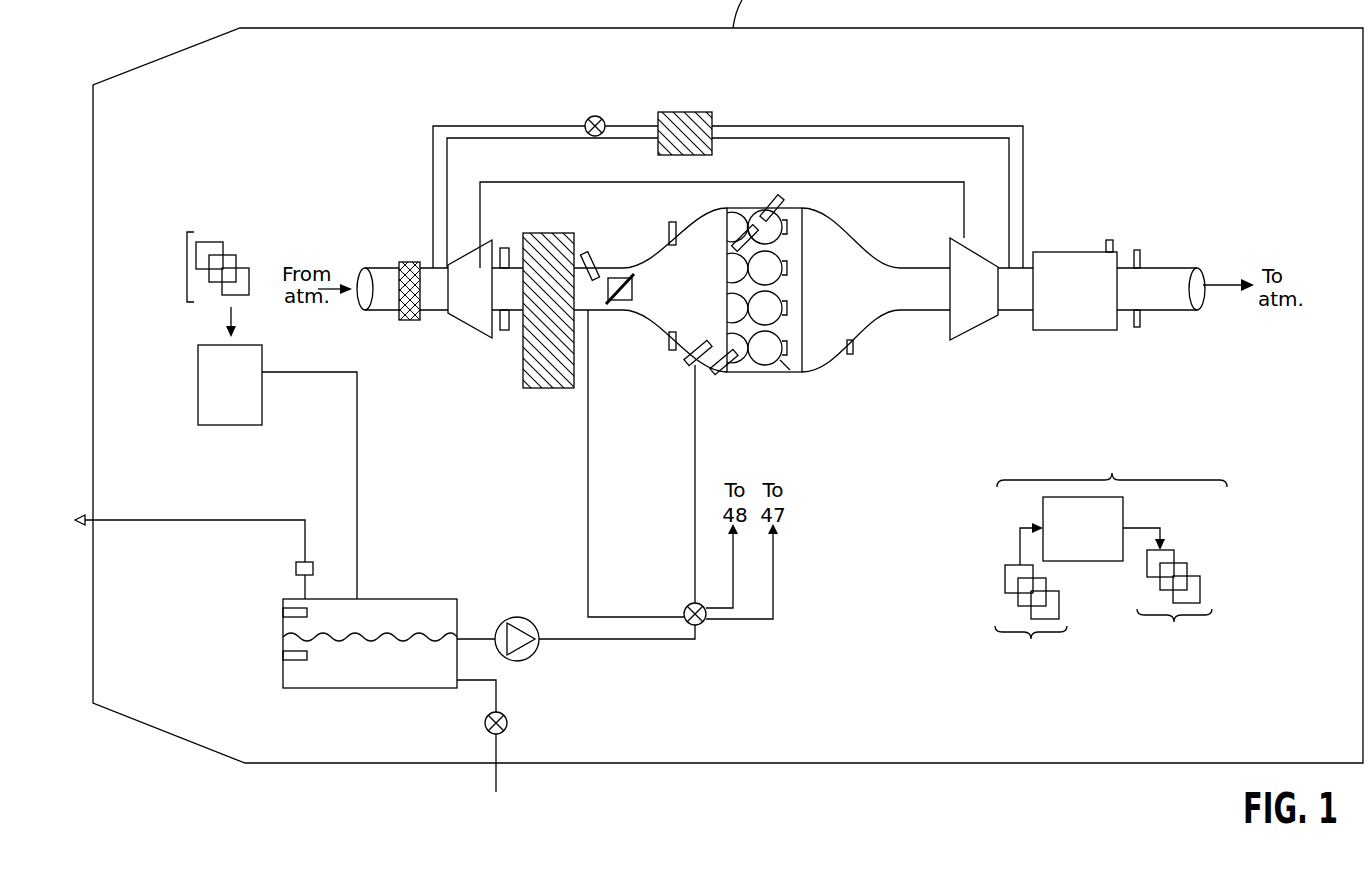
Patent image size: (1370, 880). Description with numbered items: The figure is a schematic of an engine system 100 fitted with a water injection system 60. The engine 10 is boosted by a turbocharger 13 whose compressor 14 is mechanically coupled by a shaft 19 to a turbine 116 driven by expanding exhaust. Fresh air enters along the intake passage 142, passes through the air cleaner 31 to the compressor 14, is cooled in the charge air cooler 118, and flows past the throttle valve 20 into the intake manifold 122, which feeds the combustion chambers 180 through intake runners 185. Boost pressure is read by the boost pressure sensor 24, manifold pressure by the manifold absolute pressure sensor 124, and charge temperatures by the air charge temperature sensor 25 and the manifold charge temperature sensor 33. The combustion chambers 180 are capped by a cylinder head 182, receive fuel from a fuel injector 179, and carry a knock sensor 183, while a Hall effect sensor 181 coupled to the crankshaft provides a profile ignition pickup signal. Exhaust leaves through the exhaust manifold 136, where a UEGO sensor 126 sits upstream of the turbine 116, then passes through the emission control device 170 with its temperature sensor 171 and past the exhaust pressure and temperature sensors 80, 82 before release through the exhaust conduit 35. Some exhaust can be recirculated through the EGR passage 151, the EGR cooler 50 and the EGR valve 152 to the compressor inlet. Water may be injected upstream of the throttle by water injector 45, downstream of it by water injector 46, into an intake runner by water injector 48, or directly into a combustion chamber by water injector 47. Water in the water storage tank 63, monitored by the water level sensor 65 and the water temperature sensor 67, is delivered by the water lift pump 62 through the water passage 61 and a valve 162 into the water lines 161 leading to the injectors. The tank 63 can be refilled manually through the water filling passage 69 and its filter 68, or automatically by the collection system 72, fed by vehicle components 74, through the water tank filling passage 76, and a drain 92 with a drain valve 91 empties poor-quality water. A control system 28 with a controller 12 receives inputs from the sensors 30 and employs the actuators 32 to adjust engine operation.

The engine system 100 is at (1108, 82).
The engine 10 is at (741, 195).
The controller 12 is at (1094, 544).
The turbocharger 13 is at (516, 170).
The compressor 14 is at (482, 301).
The shaft 19 is at (892, 184).
The throttle valve 20 is at (632, 288).
The boost pressure sensor 24 is at (507, 332).
The air charge temperature sensor 25 is at (503, 248).
The control system 28 is at (1112, 452).
The sensors 30 is at (1035, 605).
The air cleaner 31 is at (410, 262).
The actuators 32 is at (1177, 598).
The manifold charge temperature sensor 33 is at (669, 226).
The exhaust conduit 35 is at (1180, 267).
The water injector 45 is at (586, 252).
The water injector 46 is at (688, 362).
The water injector 47 is at (733, 245).
The water injector 48 is at (715, 372).
The EGR cooler 50 is at (697, 112).
The water injection system 60 is at (376, 722).
The water passage 61 is at (636, 641).
The water lift pump 62 is at (535, 626).
The water storage tank 63 is at (430, 599).
The water level sensor 65 is at (283, 613).
The water temperature sensor 67 is at (283, 657).
The filter 68 is at (313, 568).
The water filling passage 69 is at (222, 519).
The collection system 72 is at (241, 395).
The vehicle components 74 is at (186, 266).
The water tank filling passage 76 is at (357, 482).
The exhaust pressure sensor 80 is at (1139, 250).
The exhaust temperature sensor 82 is at (1139, 328).
The drain valve 91 is at (507, 718).
The drain 92 is at (497, 696).
The turbine 116 is at (993, 301).
The charge air cooler 118 is at (548, 233).
The intake manifold 122 is at (710, 310).
The manifold absolute pressure sensor 124 is at (669, 337).
The UEGO sensor 126 is at (861, 352).
The exhaust manifold 136 is at (895, 301).
The intake passage 142 is at (380, 312).
The EGR passage 151 is at (797, 130).
The EGR valve 152 is at (603, 120).
The water lines 161 is at (590, 498).
The valve 162 is at (705, 624).
The emission control device 170 is at (1037, 252).
The temperature sensor 171 is at (1110, 240).
The fuel injector 179 is at (780, 200).
The combustion chamber 180 is at (798, 224).
The Hall effect sensor 181 is at (776, 374).
The cylinder head 182 is at (803, 288).
The knock sensor 183 is at (790, 369).
The intake runner 185 is at (735, 215).